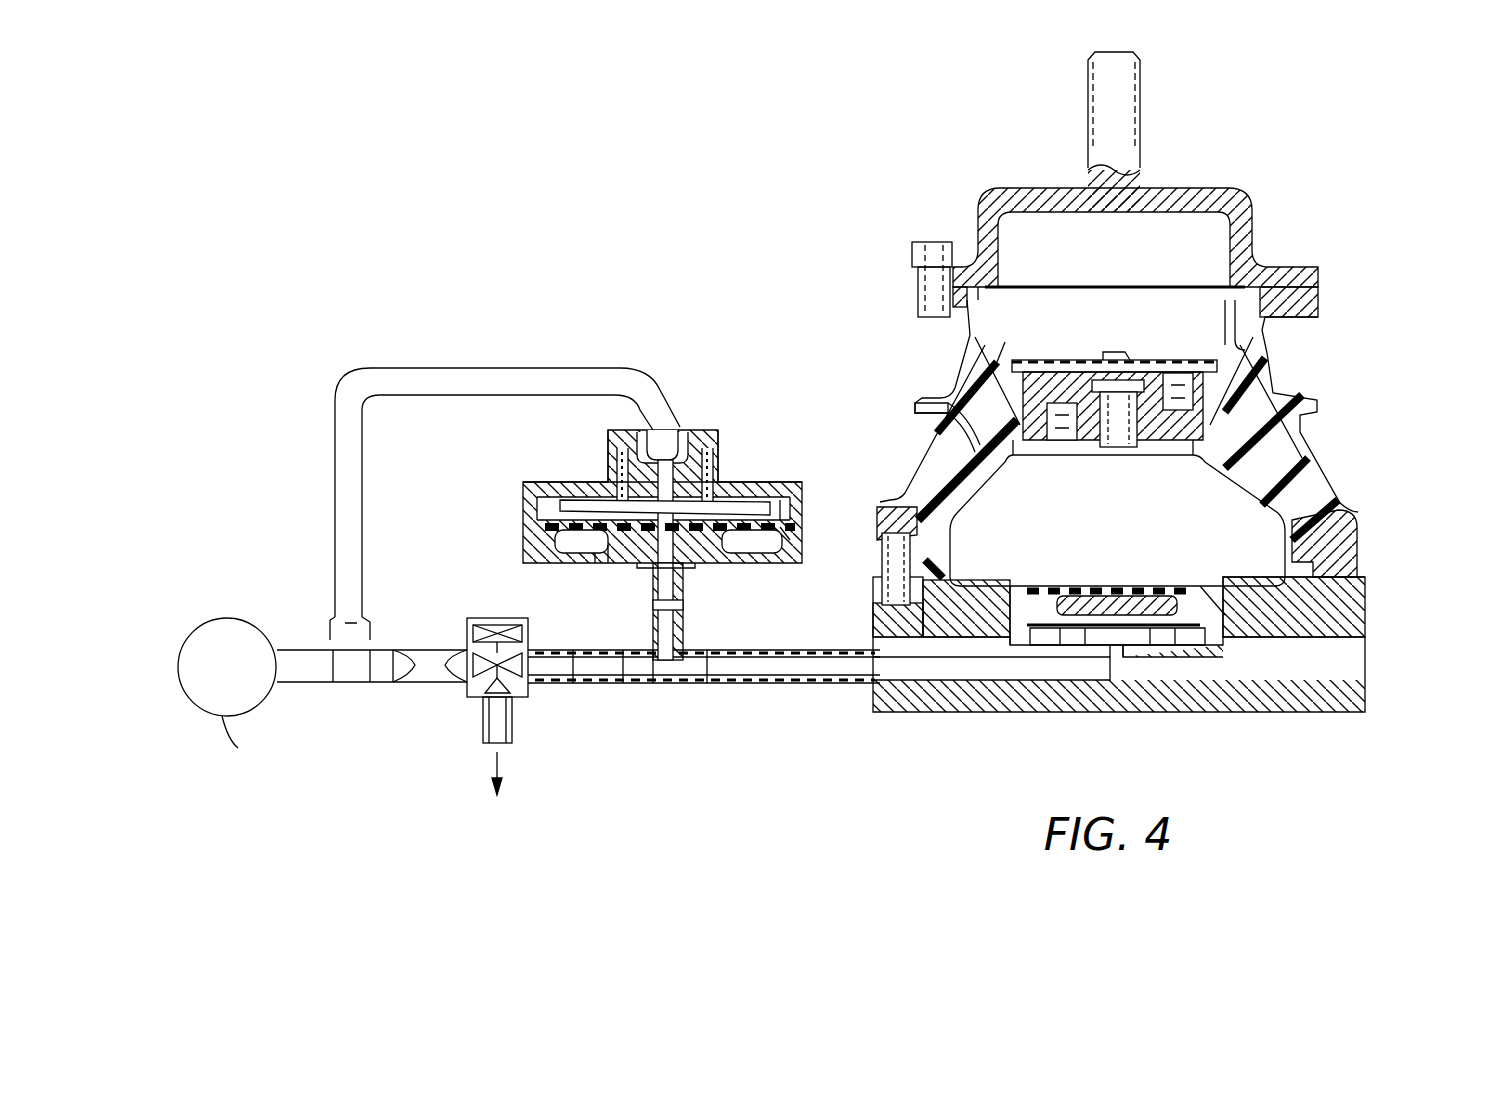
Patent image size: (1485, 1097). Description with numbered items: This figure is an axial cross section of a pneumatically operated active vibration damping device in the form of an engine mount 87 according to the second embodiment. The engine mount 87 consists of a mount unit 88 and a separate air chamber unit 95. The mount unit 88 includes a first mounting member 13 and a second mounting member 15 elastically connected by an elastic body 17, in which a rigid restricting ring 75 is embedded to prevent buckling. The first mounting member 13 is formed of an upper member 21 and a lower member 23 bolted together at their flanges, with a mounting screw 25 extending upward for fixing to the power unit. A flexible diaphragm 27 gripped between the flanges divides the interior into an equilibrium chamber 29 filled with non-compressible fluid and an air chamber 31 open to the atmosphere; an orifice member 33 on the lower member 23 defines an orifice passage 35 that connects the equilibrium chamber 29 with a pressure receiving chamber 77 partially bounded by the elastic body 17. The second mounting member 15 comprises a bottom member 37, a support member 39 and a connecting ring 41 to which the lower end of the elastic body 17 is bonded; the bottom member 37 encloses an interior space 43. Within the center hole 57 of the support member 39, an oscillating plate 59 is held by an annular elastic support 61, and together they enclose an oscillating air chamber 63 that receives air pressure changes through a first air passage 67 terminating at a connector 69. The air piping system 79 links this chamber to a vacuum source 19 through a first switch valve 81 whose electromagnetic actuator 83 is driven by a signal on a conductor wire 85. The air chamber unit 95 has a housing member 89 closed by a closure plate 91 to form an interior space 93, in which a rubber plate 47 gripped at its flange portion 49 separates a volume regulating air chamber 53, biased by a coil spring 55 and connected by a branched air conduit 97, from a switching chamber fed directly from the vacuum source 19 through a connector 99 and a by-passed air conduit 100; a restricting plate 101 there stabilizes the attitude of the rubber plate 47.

The first mounting member 13 is at (1208, 168).
The second mounting member 15 is at (1372, 546).
The elastic body 17 is at (1288, 443).
The vacuum source 19 is at (245, 625).
The upper member 21 is at (1139, 216).
The lower member 23 is at (1240, 346).
The mounting screw 25 is at (1131, 110).
The flexible diaphragm 27 is at (978, 340).
The equilibrium chamber 29 is at (1138, 372).
The air chamber 31 is at (1042, 228).
The orifice member 33 is at (1063, 385).
The orifice passage 35 is at (1175, 413).
The bottom member 37 is at (1252, 700).
The support member 39 is at (1352, 620).
The connecting ring 41 is at (1358, 527).
The interior space 43 is at (1165, 645).
The rubber plate 47 is at (578, 545).
The flange portion 49 is at (790, 530).
The volume regulating air chamber 53 is at (760, 548).
The coil spring 55 is at (720, 500).
The center hole 57 is at (1030, 600).
The oscillating plate 59 is at (1135, 600).
The elastic support 61 is at (1190, 600).
The oscillating air chamber 63 is at (1058, 645).
The first air passage 67 is at (1000, 667).
The connector 69 is at (910, 690).
The restricting ring 75 is at (958, 440).
The pressure receiving chamber 77 is at (1297, 492).
The air piping system 79 is at (822, 688).
The first switch valve 81 is at (528, 692).
The electromagnetic actuator 83 is at (505, 630).
The conductor wire 85 is at (440, 635).
The engine mount 87 is at (952, 135).
The mount unit 88 is at (918, 377).
The housing member 89 is at (528, 535).
The closure plate 91 is at (548, 483).
The interior space 93 is at (600, 548).
The air chamber unit 95 is at (785, 466).
The branched air conduit 97 is at (688, 605).
The connector 99 is at (674, 458).
The by-passed air conduit 100 is at (528, 375).
The restricting plate 101 is at (607, 476).